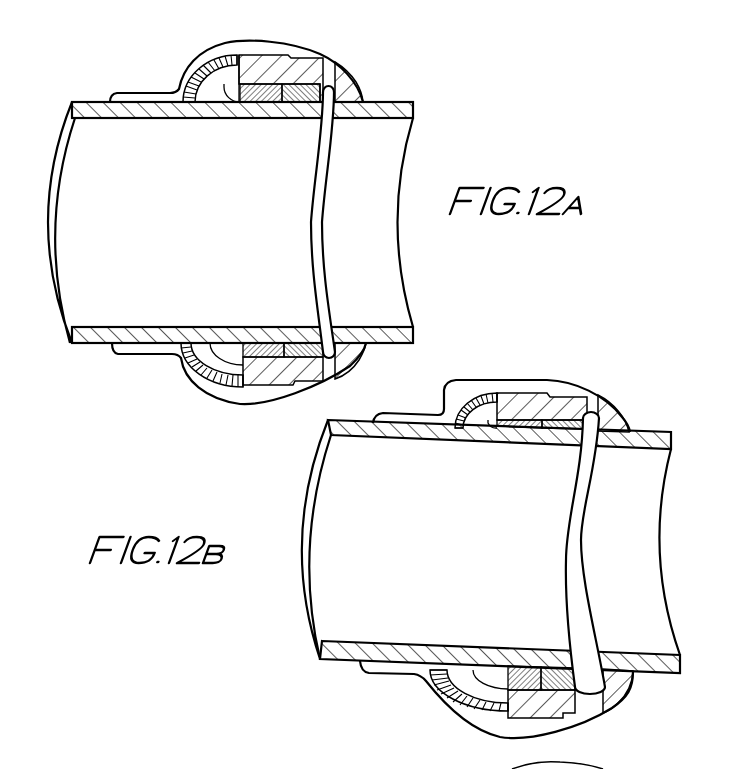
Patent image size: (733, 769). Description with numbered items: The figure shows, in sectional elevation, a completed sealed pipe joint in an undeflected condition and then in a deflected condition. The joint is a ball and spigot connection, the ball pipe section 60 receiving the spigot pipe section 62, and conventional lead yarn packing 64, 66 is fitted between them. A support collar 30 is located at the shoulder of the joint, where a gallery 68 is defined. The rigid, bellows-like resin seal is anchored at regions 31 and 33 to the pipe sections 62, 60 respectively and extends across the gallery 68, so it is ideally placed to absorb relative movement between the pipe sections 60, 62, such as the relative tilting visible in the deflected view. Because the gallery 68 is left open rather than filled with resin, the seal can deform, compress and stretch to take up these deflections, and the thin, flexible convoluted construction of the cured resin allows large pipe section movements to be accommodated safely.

The support collar 30 is at (181, 93).
The anchoring region 31 is at (122, 99).
The anchoring region 33 is at (298, 57).
The ball connection 60 is at (343, 78).
The spigot connection 62 is at (180, 109).
The lead yarn packing 64 is at (300, 100).
The lead yarn packing 66 is at (258, 98).
The gallery 68 is at (215, 73).